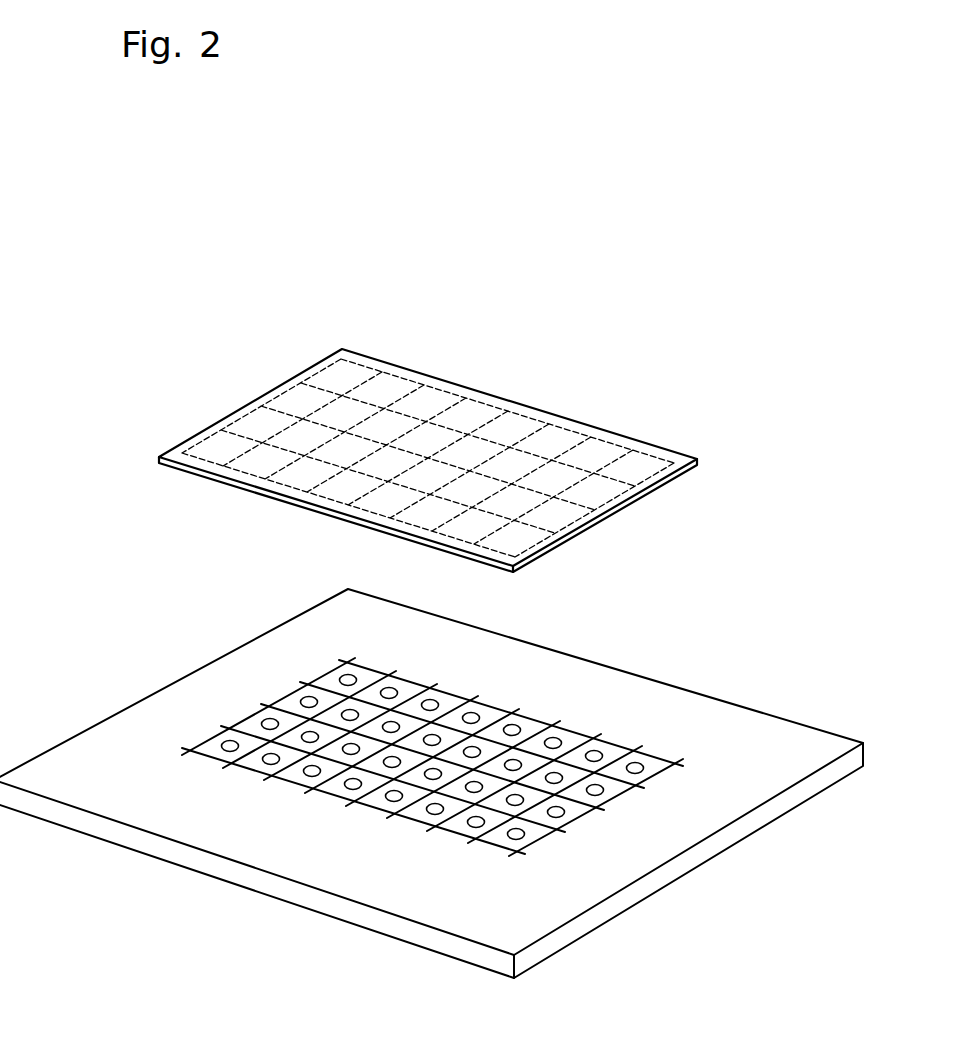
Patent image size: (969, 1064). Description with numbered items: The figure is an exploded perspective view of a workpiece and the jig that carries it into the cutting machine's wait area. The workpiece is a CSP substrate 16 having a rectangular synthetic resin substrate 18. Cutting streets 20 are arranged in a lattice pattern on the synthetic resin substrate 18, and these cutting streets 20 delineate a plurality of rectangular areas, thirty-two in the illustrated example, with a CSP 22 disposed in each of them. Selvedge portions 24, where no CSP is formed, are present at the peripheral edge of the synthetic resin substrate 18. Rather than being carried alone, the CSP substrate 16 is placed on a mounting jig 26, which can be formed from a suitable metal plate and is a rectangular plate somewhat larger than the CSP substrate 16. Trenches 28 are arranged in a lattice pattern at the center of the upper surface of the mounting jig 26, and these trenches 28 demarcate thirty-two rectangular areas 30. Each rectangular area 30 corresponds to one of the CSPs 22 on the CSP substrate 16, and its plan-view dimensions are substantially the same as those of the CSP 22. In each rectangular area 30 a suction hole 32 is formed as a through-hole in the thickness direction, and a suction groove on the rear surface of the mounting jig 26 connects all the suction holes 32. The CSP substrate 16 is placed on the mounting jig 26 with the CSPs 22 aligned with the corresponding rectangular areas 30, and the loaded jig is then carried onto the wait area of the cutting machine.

The CSP substrate 16 is at (535, 408).
The synthetic resin substrate 18 is at (610, 520).
The cutting streets 20 is at (380, 403).
The CSP 22 is at (472, 447).
The selvedge portions 24 is at (292, 388).
The mounting jig 26 is at (657, 680).
The trenches 28 is at (413, 823).
The rectangular areas 30 is at (340, 792).
The suction hole 32 is at (511, 725).